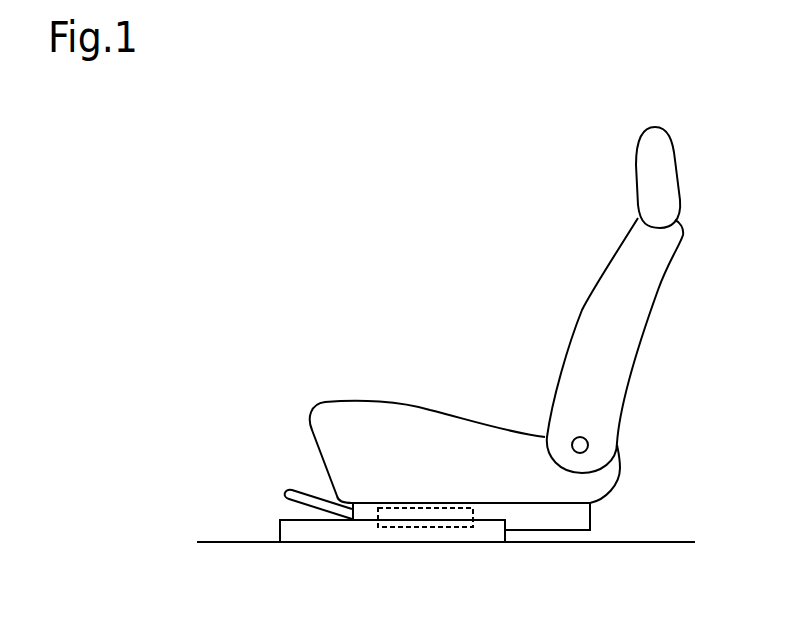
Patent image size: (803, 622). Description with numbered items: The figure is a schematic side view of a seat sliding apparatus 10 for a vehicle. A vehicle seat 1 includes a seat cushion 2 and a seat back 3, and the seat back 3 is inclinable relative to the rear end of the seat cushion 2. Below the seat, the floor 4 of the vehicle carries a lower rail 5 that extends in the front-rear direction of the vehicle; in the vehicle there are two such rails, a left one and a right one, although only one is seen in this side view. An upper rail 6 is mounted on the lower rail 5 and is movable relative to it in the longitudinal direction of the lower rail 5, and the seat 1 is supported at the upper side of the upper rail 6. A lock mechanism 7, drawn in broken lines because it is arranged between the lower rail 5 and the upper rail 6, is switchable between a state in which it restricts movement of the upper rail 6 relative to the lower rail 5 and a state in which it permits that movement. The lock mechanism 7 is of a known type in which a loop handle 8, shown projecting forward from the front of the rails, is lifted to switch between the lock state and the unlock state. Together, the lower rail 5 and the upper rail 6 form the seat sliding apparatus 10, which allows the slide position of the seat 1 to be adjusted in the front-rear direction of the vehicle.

The vehicle seat 1 is at (348, 180).
The seat cushion 2 is at (393, 403).
The seat back 3 is at (640, 338).
The floor 4 is at (212, 542).
The lower rail 5 is at (291, 520).
The upper rail 6 is at (590, 505).
The lock mechanism 7 is at (463, 508).
The loop handle 8 is at (293, 487).
The seat sliding apparatus 10 is at (216, 373).